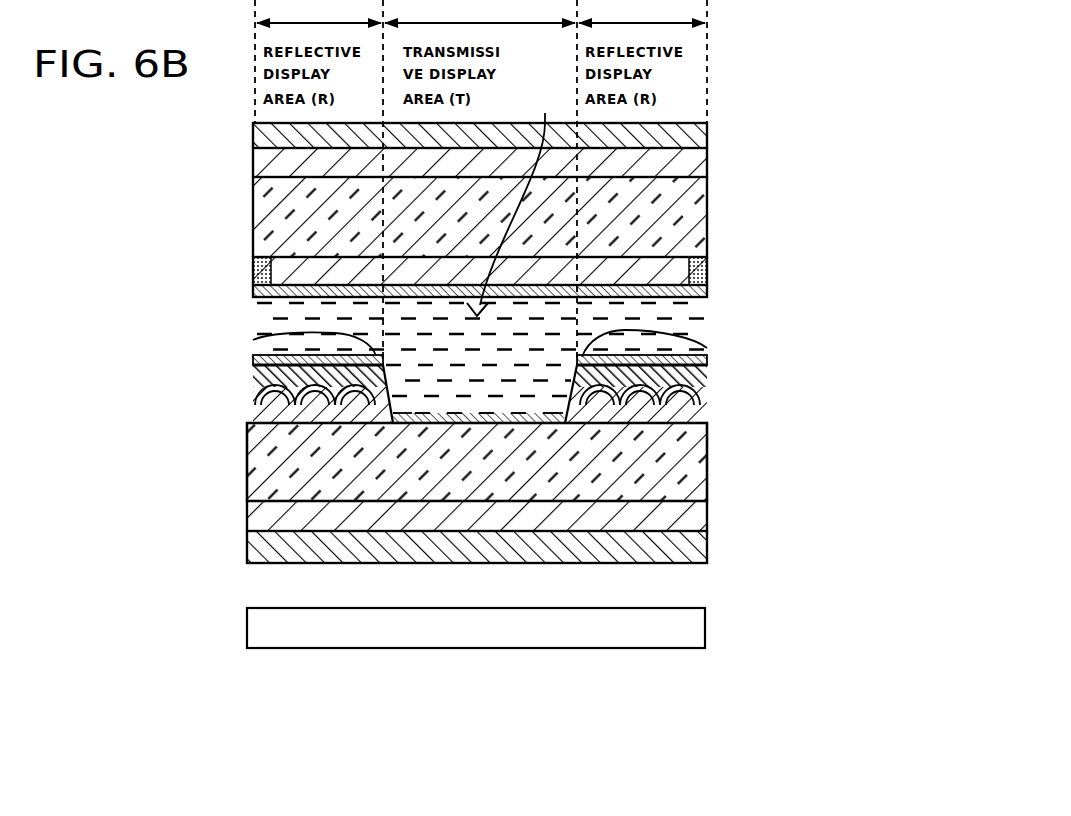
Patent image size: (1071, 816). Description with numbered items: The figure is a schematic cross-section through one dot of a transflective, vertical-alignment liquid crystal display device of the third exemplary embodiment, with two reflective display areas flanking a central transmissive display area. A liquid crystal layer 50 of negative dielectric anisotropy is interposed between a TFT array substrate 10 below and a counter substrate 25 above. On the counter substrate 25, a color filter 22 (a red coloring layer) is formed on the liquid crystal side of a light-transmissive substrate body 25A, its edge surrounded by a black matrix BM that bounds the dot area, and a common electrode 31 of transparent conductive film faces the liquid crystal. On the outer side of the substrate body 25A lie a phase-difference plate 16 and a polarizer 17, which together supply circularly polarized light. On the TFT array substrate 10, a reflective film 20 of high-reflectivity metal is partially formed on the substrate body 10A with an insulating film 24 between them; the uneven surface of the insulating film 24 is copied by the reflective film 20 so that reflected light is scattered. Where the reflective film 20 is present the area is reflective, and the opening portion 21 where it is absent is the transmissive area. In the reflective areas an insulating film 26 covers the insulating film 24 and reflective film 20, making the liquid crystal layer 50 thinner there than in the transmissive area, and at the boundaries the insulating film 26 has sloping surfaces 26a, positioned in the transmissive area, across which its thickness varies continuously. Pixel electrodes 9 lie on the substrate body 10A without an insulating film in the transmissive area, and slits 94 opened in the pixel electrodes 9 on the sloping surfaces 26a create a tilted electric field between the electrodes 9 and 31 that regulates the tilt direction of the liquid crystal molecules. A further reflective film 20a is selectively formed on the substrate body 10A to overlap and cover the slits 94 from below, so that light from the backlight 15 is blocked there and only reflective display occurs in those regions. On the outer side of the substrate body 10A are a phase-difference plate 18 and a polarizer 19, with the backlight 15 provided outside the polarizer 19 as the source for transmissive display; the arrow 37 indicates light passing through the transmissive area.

The polarizer 17 is at (707, 137).
The phase-difference plate 16 is at (707, 173).
The substrate body 25A is at (707, 212).
The color filter 22 is at (707, 270).
The black matrix BM is at (707, 291).
The common electrode 31 is at (707, 297).
The liquid crystal layer 50 is at (707, 313).
The slit 94 is at (253, 340).
The pixel electrode 9 is at (707, 362).
The insulating film 26 is at (707, 375).
The reflective film 20 is at (707, 395).
The insulating film 24 is at (707, 423).
The substrate body 10A is at (707, 480).
The phase-difference plate 18 is at (707, 531).
The polarizer 19 is at (707, 555).
The backlight 15 is at (705, 627).
The light path 37 is at (515, 200).
The counter substrate 25 is at (238, 122).
The TFT array substrate 10 is at (235, 355).
The reflective film 20a is at (388, 418).
The opening portion 21 is at (403, 416).
The sloping surface 26a is at (548, 414).